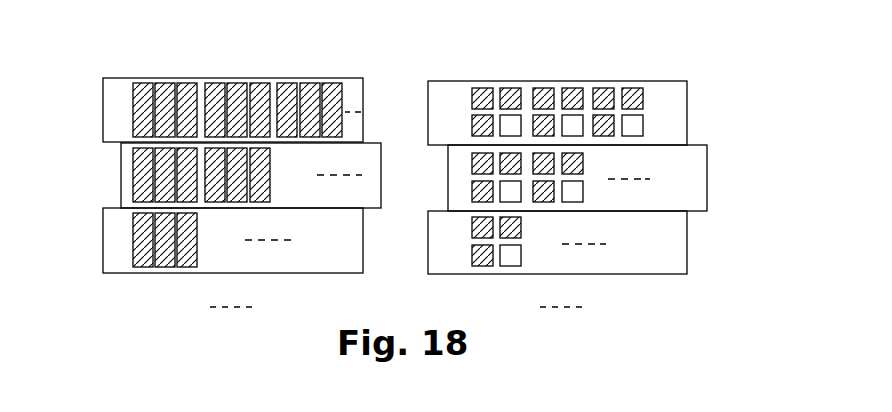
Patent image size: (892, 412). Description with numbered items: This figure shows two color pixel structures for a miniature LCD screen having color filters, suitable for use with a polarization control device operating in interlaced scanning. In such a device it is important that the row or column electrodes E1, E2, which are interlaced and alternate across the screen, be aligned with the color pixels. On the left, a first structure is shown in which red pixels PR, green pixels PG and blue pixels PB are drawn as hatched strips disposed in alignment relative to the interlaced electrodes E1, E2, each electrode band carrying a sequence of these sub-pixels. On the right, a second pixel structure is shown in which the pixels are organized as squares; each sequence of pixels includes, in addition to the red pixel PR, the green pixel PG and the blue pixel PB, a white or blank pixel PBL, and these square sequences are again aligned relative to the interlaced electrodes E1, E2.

The row or column electrode E1 is at (728, 253).
The row or column electrode E2 is at (737, 188).
The red pixel PR is at (480, 88).
The green pixel PG is at (517, 88).
The blue pixel PB is at (473, 128).
The white (blank) pixel PBL is at (520, 123).